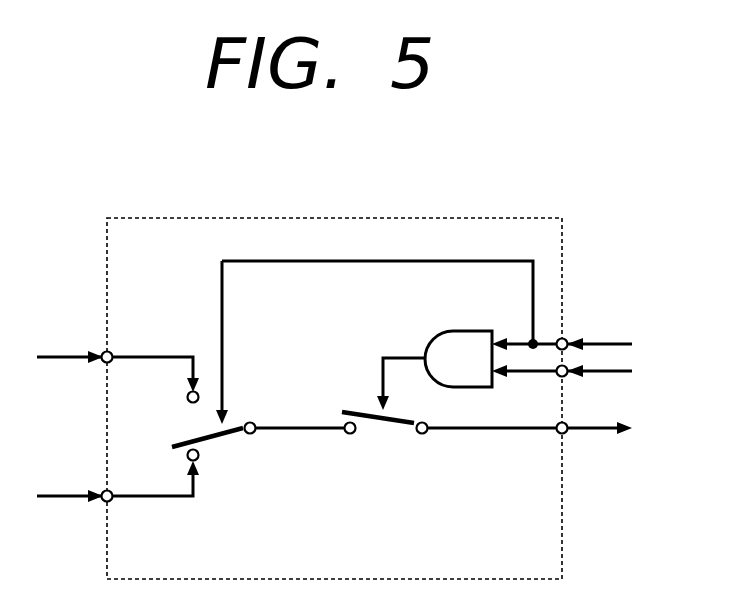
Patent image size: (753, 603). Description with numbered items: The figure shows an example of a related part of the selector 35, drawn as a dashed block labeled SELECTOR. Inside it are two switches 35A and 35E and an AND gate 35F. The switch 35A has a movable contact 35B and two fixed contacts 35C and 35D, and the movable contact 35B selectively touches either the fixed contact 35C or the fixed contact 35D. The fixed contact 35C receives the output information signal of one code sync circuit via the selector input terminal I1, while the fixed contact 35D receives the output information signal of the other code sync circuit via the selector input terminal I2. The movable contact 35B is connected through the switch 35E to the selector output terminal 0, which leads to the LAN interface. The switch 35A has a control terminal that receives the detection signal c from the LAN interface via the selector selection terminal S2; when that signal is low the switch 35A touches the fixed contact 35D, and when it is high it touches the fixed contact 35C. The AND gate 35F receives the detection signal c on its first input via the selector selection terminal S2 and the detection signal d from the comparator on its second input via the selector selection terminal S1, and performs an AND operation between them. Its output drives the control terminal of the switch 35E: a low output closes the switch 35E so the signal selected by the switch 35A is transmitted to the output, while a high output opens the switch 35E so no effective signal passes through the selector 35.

The selector 35 is at (546, 207).
The switch 35A is at (228, 450).
The movable contact 35B is at (251, 422).
The fixed contact 35C is at (189, 394).
The fixed contact 35D is at (173, 464).
The switch 35E is at (378, 432).
The AND gate 35F is at (458, 331).
The selector input terminal I1 is at (103, 352).
The selector input terminal I2 is at (103, 490).
The selector selection terminal S1 is at (566, 383).
The selector selection terminal S2 is at (566, 333).
The selector output terminal 0 is at (570, 435).